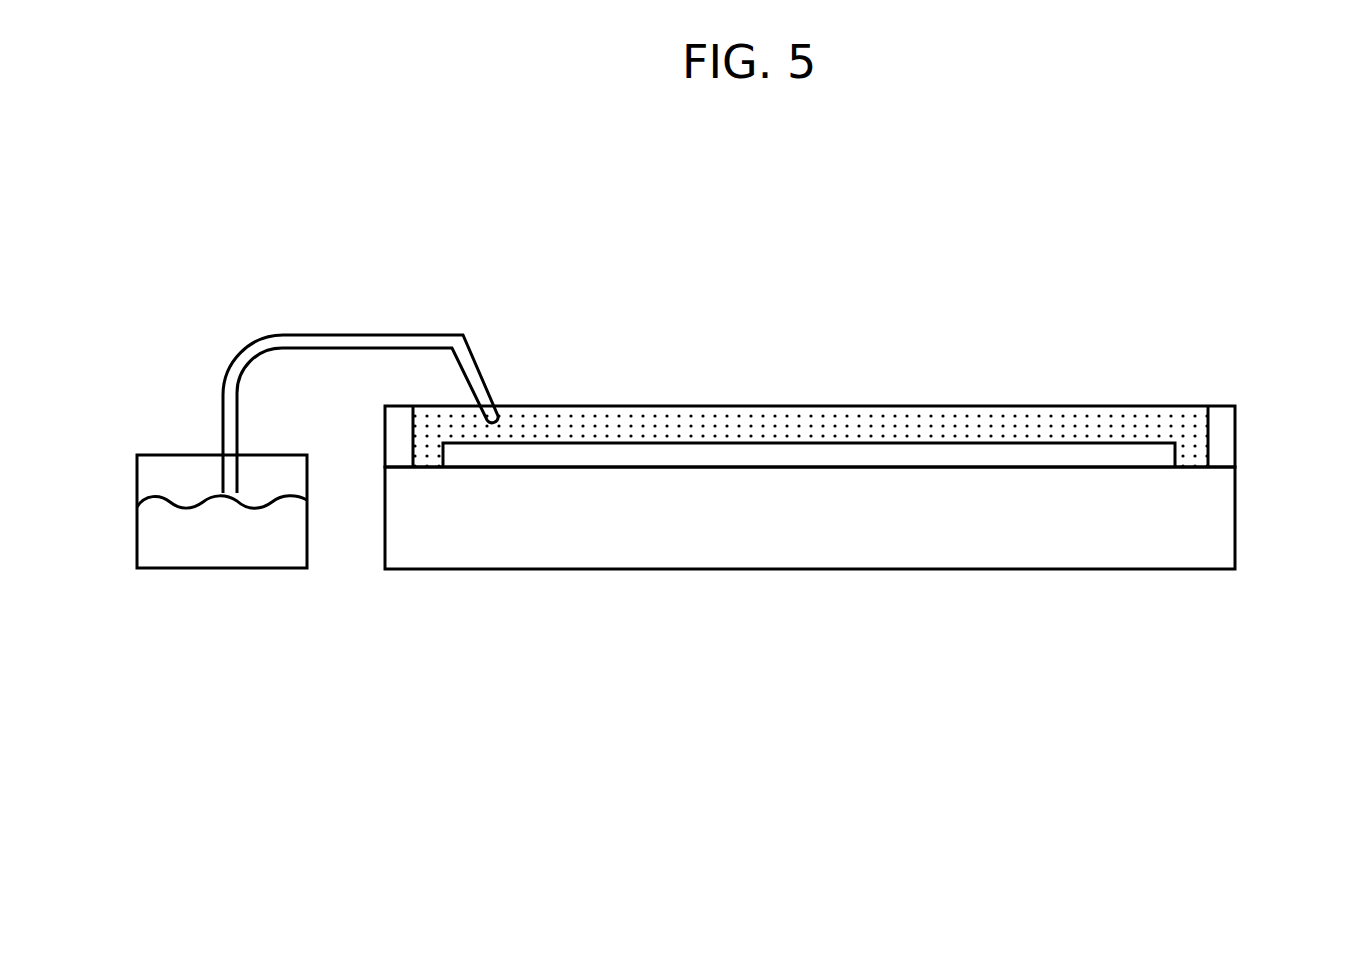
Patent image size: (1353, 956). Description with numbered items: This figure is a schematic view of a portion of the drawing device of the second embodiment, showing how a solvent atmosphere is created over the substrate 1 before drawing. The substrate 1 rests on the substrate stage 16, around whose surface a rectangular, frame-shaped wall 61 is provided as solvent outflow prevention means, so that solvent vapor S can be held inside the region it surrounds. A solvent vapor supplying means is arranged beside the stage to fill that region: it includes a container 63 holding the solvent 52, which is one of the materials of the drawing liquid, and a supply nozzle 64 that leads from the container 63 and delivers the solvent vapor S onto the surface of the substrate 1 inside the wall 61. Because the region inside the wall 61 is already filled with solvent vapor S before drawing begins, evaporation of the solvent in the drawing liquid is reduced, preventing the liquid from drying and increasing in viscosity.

The substrate 1 is at (712, 455).
The substrate stage 16 is at (788, 569).
The wall 61 is at (1235, 438).
The solvent vapor S is at (990, 418).
The container 63 is at (137, 480).
The solvent 52 is at (230, 555).
The supply nozzle 64 is at (478, 360).